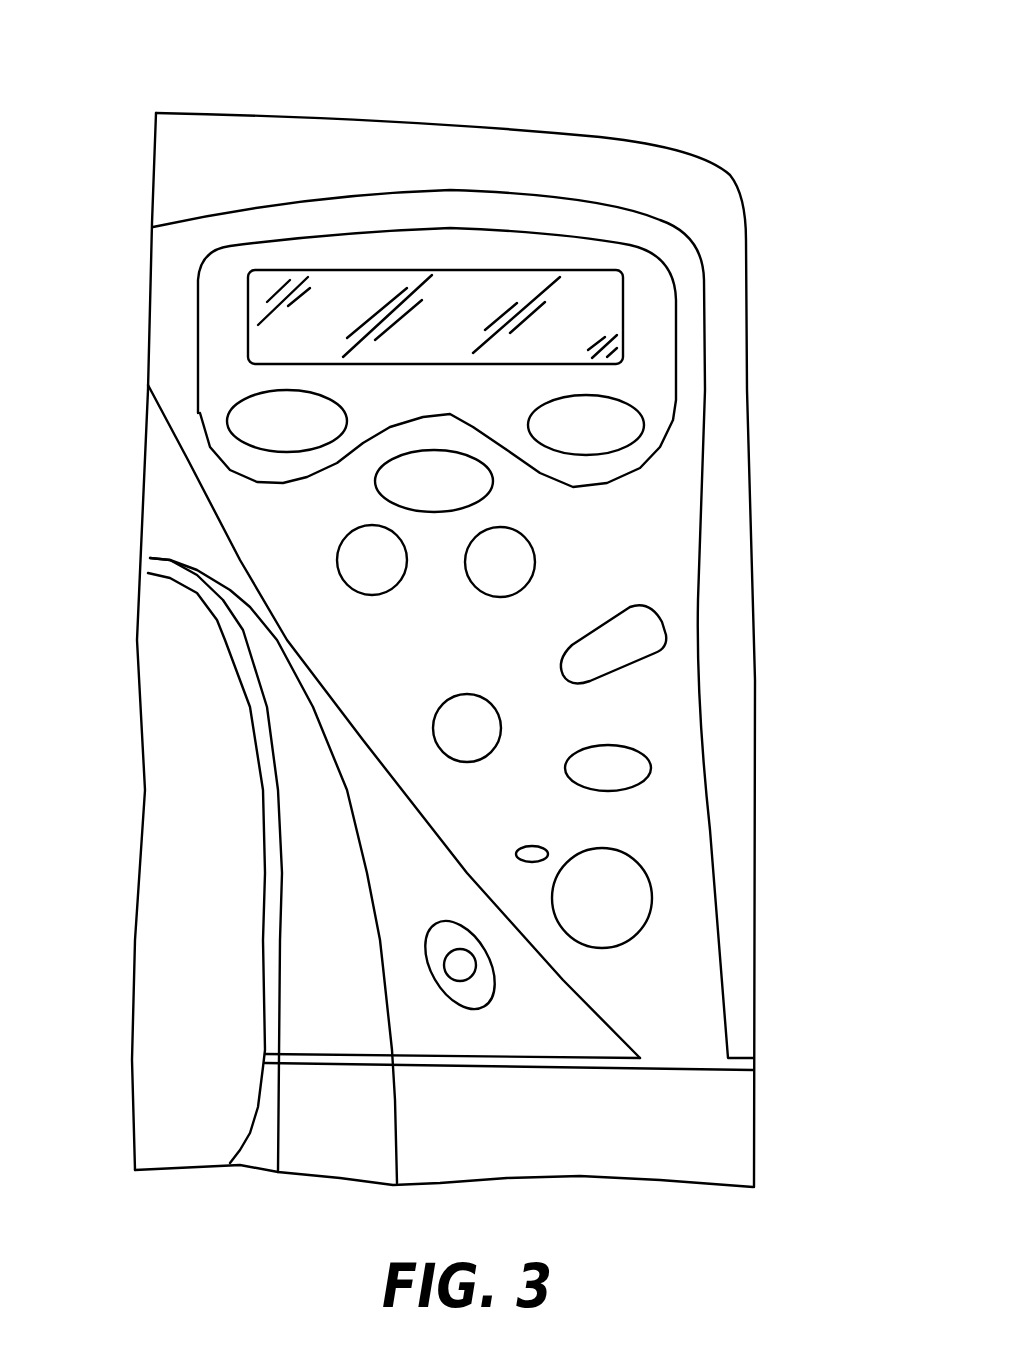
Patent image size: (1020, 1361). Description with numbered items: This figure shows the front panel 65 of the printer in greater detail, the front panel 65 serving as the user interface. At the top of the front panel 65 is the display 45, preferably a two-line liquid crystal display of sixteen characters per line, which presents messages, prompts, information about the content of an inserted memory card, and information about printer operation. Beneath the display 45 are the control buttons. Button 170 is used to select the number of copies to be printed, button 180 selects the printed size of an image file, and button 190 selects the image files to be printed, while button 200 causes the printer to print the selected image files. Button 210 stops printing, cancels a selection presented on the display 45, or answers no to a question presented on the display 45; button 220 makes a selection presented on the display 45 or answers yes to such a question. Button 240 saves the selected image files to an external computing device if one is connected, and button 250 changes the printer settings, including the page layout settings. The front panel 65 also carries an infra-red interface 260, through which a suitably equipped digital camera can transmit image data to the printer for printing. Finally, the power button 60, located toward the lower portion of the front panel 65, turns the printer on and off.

The front panel 65 is at (696, 82).
The display 45 is at (482, 283).
The button 170 is at (258, 420).
The button 180 is at (620, 427).
The button 190 is at (447, 485).
The button 210 is at (372, 563).
The button 220 is at (507, 565).
The button 200 is at (635, 638).
The button 240 is at (467, 730).
The button 250 is at (610, 770).
The infra-red interface 260 is at (610, 902).
The power button 60 is at (462, 967).